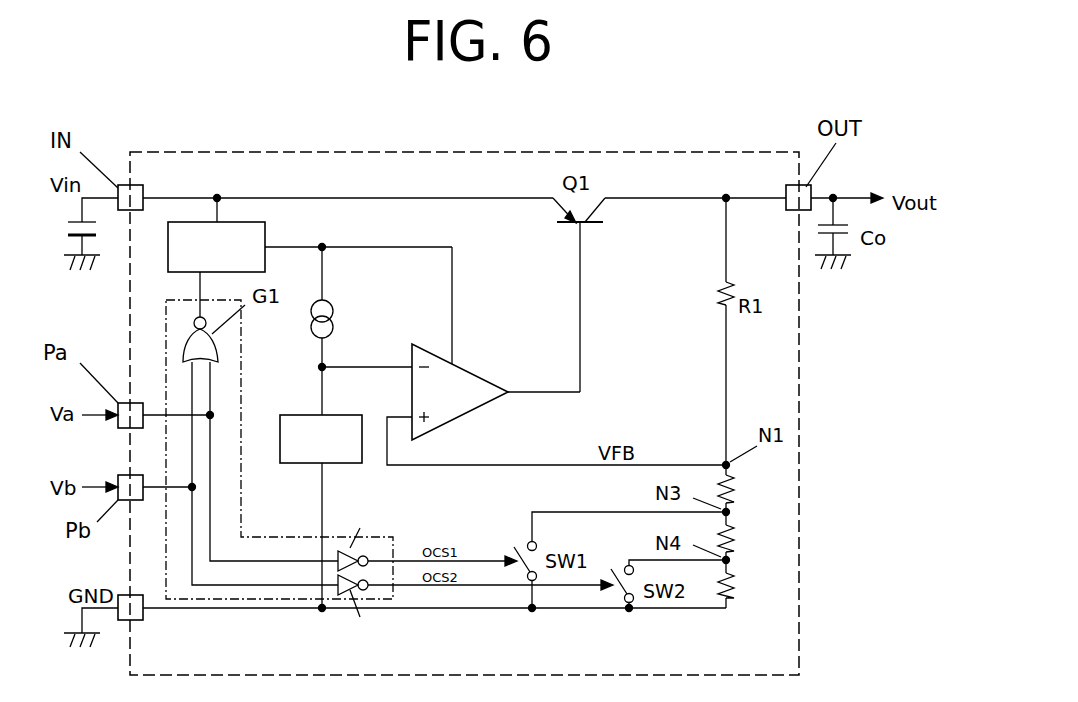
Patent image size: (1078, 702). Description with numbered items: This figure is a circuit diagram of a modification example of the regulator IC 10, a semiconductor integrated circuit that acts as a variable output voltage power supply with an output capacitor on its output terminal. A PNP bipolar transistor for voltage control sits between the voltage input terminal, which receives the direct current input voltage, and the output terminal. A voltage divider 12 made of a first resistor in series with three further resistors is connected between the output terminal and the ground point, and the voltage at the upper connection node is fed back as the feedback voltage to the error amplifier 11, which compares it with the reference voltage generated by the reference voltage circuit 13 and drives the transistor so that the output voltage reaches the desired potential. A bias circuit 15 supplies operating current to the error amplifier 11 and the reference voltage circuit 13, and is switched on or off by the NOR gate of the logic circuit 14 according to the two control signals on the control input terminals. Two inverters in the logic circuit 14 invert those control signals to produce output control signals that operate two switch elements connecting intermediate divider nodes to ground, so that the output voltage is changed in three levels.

The regulator IC 10 is at (651, 152).
The error amplifier 11 is at (468, 370).
The voltage divider 12 is at (745, 625).
The reference voltage circuit 13 is at (298, 415).
The logic circuit 14 is at (262, 535).
The bias circuit 15 is at (248, 221).